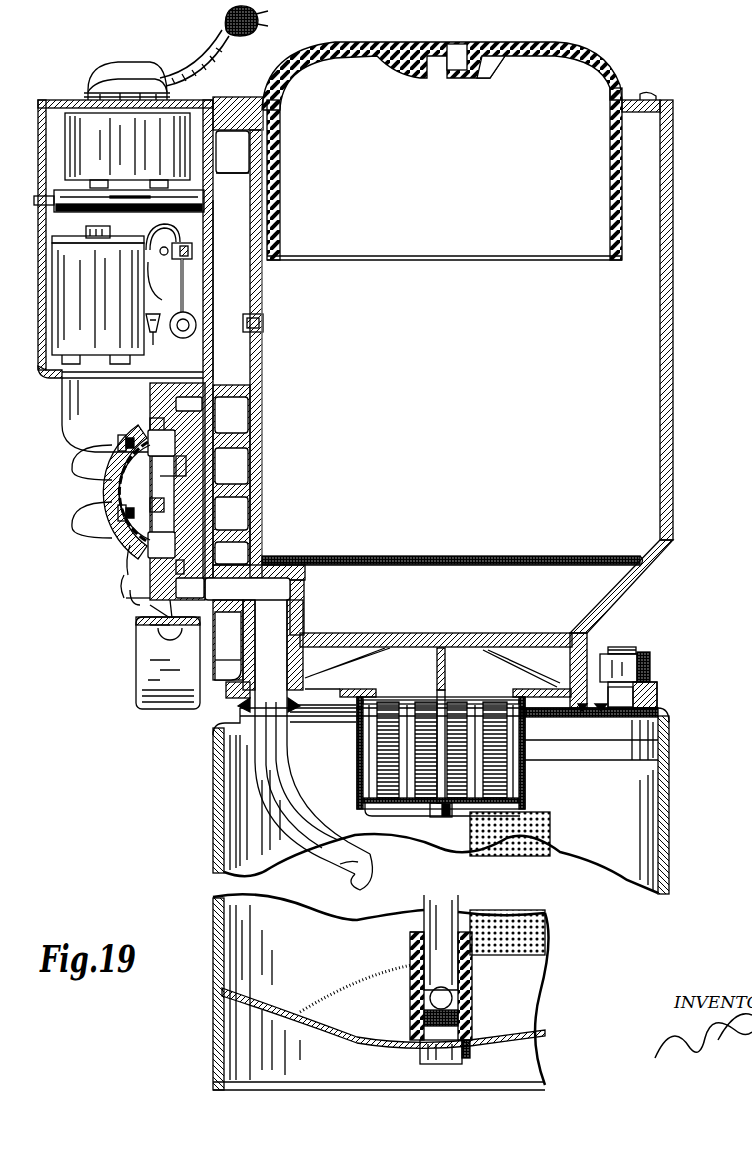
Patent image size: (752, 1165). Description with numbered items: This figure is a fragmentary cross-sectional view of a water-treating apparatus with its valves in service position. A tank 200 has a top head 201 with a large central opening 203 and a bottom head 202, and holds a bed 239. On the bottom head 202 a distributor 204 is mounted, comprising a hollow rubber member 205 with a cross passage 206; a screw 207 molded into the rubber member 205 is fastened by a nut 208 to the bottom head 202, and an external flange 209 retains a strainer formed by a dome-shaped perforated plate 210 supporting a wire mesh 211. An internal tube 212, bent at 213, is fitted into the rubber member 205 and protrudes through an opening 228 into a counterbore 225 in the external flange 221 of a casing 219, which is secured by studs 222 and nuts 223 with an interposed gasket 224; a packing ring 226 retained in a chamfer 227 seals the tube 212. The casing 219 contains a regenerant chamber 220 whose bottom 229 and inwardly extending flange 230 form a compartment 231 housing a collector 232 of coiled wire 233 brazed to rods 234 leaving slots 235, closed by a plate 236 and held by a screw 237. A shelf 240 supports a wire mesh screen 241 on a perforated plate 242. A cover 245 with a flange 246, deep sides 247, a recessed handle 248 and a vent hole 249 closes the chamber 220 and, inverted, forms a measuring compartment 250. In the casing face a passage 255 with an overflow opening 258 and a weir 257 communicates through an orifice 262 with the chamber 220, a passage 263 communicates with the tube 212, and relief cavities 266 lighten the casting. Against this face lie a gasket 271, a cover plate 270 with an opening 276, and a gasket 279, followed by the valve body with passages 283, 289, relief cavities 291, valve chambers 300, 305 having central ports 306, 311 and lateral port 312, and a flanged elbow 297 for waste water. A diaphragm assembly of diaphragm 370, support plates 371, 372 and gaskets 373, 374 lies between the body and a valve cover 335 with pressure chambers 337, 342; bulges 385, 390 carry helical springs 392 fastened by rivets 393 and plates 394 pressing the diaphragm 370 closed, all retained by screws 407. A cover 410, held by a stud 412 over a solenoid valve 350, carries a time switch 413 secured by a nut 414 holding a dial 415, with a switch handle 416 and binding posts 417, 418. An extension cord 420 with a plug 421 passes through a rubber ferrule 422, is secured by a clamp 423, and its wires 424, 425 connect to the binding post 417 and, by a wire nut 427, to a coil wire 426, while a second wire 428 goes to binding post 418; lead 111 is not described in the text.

The lead 111 is at (40, 205).
The tank 200 is at (214, 826).
The top head 201 is at (670, 724).
The bottom head 202 is at (356, 1046).
The central opening 203 is at (324, 716).
The distributor 204 is at (417, 1005).
The hollow rubber member 205 is at (408, 938).
The cross passage 206 is at (452, 1000).
The screw 207 is at (432, 1066).
The nut 208 is at (462, 1066).
The external flange 209 is at (408, 962).
The dome-shaped perforated plate 210 is at (310, 1010).
The wire mesh 211 is at (342, 990).
The internal tube 212 is at (290, 734).
The bent portion 213 is at (350, 866).
The casing 219 is at (674, 382).
The regenerant chamber 220 is at (360, 335).
The external flange 221 is at (660, 694).
The studs 222 is at (640, 648).
The nuts 223 is at (652, 666).
The gasket 224 is at (660, 712).
The counterbore 225 is at (236, 680).
The packing ring 226 is at (236, 704).
The chamfer 227 is at (228, 694).
The opening 228 is at (296, 712).
The bottom 229 is at (358, 624).
The inwardly extending flange 230 is at (346, 692).
The compartment 231 is at (363, 663).
The collector 232 is at (358, 802).
The wire 233 is at (358, 786).
The rods 234 is at (502, 694).
The slots 235 is at (528, 762).
The plate 236 is at (372, 812).
The screw 237 is at (446, 814).
The bed 239 is at (586, 896).
The shelf 240 is at (618, 572).
The wire mesh screen 241 is at (450, 556).
The perforated plate 242 is at (480, 566).
The cover 245 is at (592, 52).
The flange 246 is at (656, 94).
The deep sides 247 is at (610, 190).
The recessed handle 248 is at (424, 42).
The vent hole 249 is at (480, 76).
The measuring compartment 250 is at (444, 180).
The passage 255 is at (238, 337).
The weir 257 is at (238, 174).
The overflow opening 258 is at (248, 155).
The orifice 262 is at (266, 322).
The passage 263 is at (273, 640).
The relief cavities 266 is at (231, 475).
The cover plate 270 is at (229, 640).
The gasket 271 is at (214, 304).
The opening 276 is at (210, 590).
The gasket 279 is at (207, 638).
The passage 283 is at (191, 466).
The passage 289 is at (191, 588).
The relief cavities 291 is at (191, 404).
The flanged elbow 297 is at (156, 710).
The valve chamber 300 is at (164, 504).
The valve chamber 305 is at (166, 426).
The central port 306 is at (163, 545).
The central port 311 is at (163, 443).
The lateral port 312 is at (170, 612).
The valve cover 335 is at (140, 606).
The pressure chamber 337 is at (126, 582).
The pressure chamber 342 is at (136, 440).
The solenoid valve 350 is at (50, 380).
The diaphragm 370 is at (146, 626).
The perforated support plate 371 is at (158, 614).
The perforated support plate 372 is at (134, 380).
The gasket 373 is at (166, 484).
The gasket 374 is at (128, 470).
The bulge 385 is at (128, 572).
The bulge 390 is at (140, 428).
The helical springs 392 is at (126, 444).
The rivets 393 is at (118, 442).
The plates 394 is at (84, 450).
The screws 407 is at (136, 600).
The cover 410 is at (50, 106).
The stud 412 is at (74, 246).
The time switch 413 is at (68, 128).
The nut 414 is at (95, 98).
The dial 415 is at (100, 95).
The switch handle 416 is at (126, 62).
The binding post 417 is at (160, 190).
The binding post 418 is at (84, 190).
The extension cord 420 is at (188, 36).
The plug 421 is at (262, 30).
The rubber ferrule 422 is at (184, 338).
The clamp 423 is at (186, 243).
The wire 424 is at (174, 228).
The wire 425 is at (150, 268).
The wire 426 is at (154, 318).
The wire nut 427 is at (154, 334).
The wire 428 is at (150, 242).